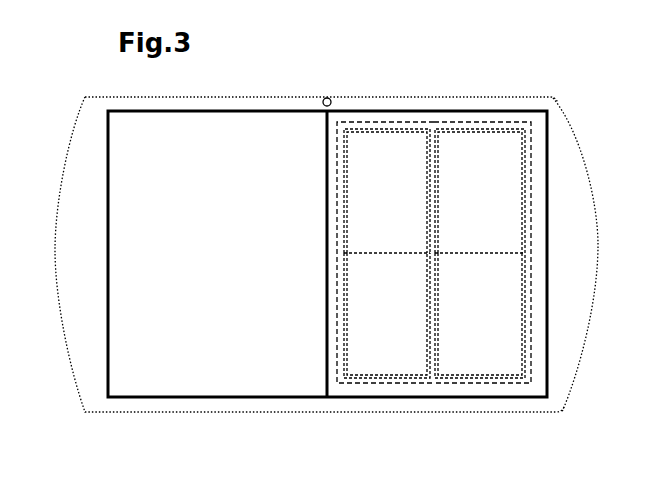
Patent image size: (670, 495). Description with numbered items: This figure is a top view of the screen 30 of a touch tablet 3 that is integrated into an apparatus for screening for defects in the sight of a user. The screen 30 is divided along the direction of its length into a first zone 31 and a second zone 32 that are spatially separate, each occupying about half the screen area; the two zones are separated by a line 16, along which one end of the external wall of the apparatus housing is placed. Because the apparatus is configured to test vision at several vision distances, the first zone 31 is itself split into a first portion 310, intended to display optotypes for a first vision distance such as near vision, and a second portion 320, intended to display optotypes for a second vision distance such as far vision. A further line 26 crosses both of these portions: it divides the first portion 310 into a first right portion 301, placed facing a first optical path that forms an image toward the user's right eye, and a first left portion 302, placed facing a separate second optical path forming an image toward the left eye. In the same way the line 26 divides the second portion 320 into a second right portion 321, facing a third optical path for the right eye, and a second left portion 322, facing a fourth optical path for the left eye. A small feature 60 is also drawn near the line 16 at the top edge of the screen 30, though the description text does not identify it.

The touch tablet 3 is at (60, 177).
The line 16 is at (326, 368).
The line 26 is at (470, 254).
The screen 30 is at (557, 99).
The first zone 31 is at (487, 297).
The second zone 32 is at (132, 358).
The pivot 60 is at (318, 102).
The first right portion 301 is at (368, 367).
The first left portion 302 is at (362, 142).
The first portion 310 is at (403, 384).
The second portion 320 is at (468, 384).
The second right portion 321 is at (503, 367).
The second left portion 322 is at (462, 142).